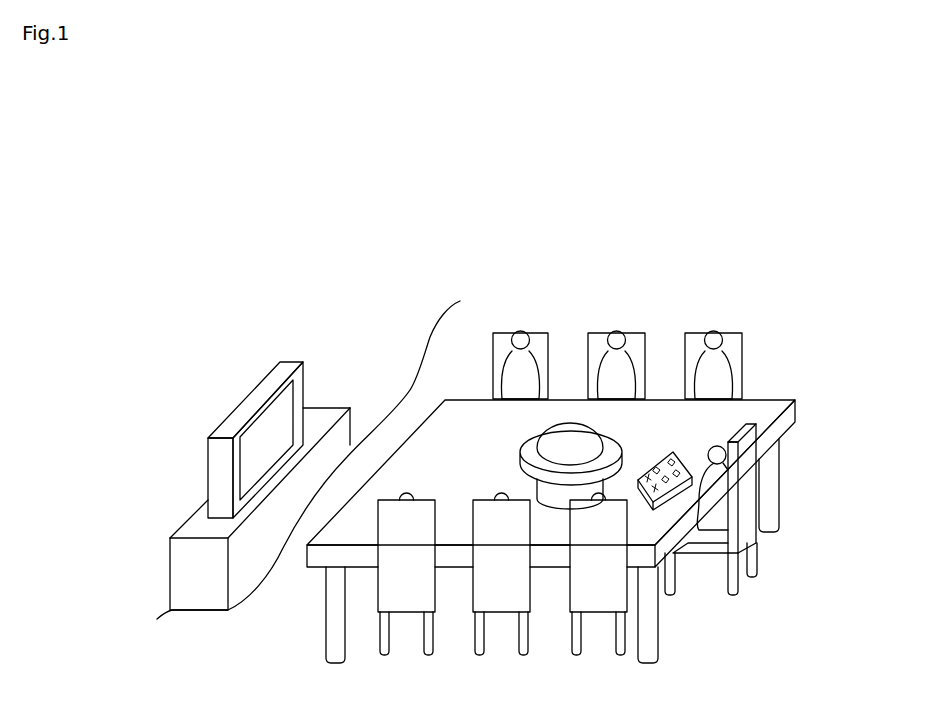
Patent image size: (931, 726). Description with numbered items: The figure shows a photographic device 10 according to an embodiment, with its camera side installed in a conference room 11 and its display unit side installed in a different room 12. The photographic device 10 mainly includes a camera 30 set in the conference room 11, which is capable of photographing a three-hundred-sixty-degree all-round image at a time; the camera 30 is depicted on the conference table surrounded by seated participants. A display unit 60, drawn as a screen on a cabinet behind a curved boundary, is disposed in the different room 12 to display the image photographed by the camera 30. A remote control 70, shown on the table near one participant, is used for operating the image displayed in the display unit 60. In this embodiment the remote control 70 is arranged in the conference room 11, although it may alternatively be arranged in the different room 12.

The photographic device 10 is at (788, 352).
The conference room 11 is at (700, 309).
The different room 12 is at (385, 307).
The camera 30 is at (610, 447).
The display unit 60 is at (298, 383).
The remote control 70 is at (678, 462).